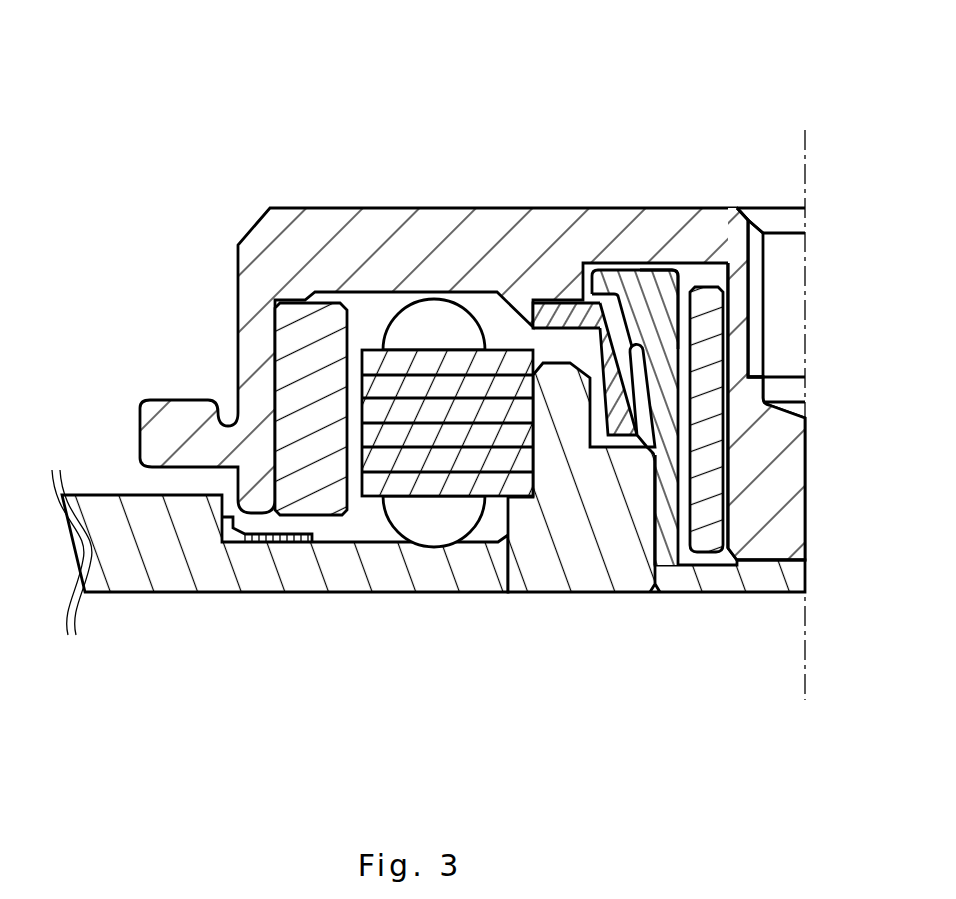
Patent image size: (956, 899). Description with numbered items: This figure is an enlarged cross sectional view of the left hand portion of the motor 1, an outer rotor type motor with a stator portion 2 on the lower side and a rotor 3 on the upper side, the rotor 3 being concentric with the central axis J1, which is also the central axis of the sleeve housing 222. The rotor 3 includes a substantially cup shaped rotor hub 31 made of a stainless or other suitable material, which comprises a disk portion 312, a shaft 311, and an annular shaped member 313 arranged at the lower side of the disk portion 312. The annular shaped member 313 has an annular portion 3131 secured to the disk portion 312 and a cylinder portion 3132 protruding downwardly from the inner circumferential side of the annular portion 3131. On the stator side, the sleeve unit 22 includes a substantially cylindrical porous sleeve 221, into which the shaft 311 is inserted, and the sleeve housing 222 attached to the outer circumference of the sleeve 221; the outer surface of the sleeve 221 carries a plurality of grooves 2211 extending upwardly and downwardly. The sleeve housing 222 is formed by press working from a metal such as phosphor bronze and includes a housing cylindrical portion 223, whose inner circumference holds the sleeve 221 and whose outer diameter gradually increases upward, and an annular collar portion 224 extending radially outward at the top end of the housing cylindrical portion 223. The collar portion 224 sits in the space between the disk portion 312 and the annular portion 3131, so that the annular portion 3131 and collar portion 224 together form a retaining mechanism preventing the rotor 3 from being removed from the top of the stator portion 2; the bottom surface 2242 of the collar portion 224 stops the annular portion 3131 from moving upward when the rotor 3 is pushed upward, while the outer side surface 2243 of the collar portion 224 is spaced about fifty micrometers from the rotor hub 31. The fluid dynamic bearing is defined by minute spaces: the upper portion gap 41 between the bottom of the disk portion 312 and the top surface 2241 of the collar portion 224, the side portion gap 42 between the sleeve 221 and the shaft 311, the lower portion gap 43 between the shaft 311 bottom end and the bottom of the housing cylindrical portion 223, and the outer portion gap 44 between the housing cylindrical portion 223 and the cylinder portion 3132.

The motor 1 is at (190, 155).
The stator portion 2 is at (428, 446).
The sleeve unit 22 is at (583, 446).
The sleeve 221 is at (656, 543).
The grooves 2211 is at (672, 491).
The sleeve housing 222 is at (639, 683).
The housing cylindrical portion 223 is at (655, 592).
The collar portion 224 is at (547, 273).
The top surface of the collar portion 2241 is at (606, 253).
The bottom surface of the collar portion 2242 is at (533, 300).
The outer side surface of the collar portion 2243 is at (580, 286).
The rotor 3 is at (486, 287).
The rotor hub 31 is at (748, 227).
The shaft 311 is at (750, 290).
The disk portion 312 is at (682, 233).
The annular shaped member 313 is at (321, 134).
The annular portion 3131 is at (540, 316).
The cylinder portion 3132 is at (600, 350).
The upper portion gap 41 is at (663, 249).
The side portion gap 42 is at (726, 524).
The lower portion gap 43 is at (792, 570).
The outer portion gap 44 is at (693, 293).
The central axis J1 is at (805, 136).